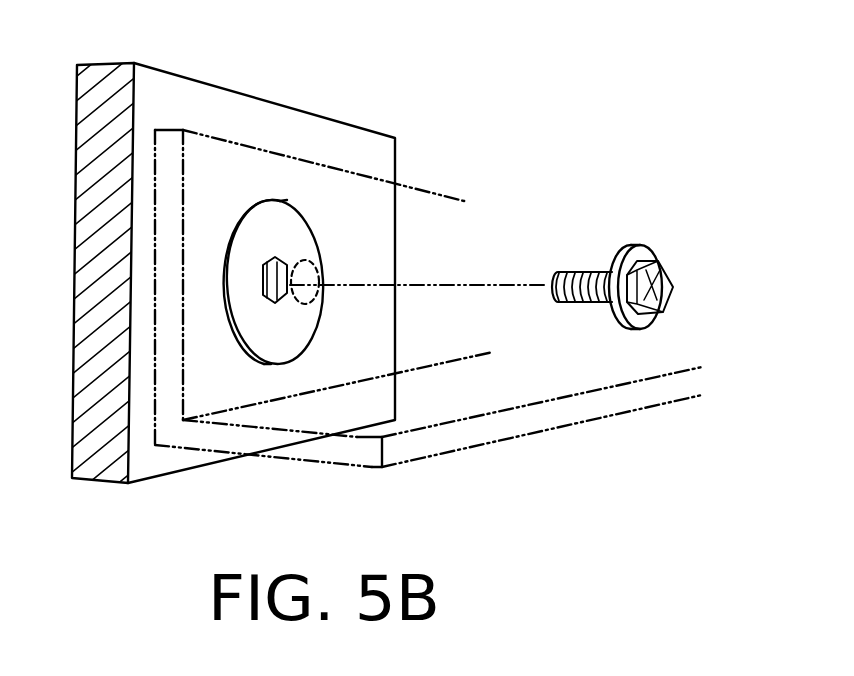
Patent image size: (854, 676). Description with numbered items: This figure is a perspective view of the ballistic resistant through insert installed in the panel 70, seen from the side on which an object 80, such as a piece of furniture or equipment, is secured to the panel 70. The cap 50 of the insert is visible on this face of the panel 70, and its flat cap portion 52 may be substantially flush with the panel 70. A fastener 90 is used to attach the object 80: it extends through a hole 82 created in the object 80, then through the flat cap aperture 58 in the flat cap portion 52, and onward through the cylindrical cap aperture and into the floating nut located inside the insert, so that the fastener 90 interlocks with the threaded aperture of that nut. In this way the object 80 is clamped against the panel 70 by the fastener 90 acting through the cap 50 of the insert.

The cap 50 is at (282, 260).
The flat cap portion 52 is at (302, 320).
The flat cap aperture 58 is at (272, 302).
The panel 70 is at (316, 128).
The object 80 is at (460, 197).
The hole 82 is at (313, 262).
The fastener 90 is at (583, 272).